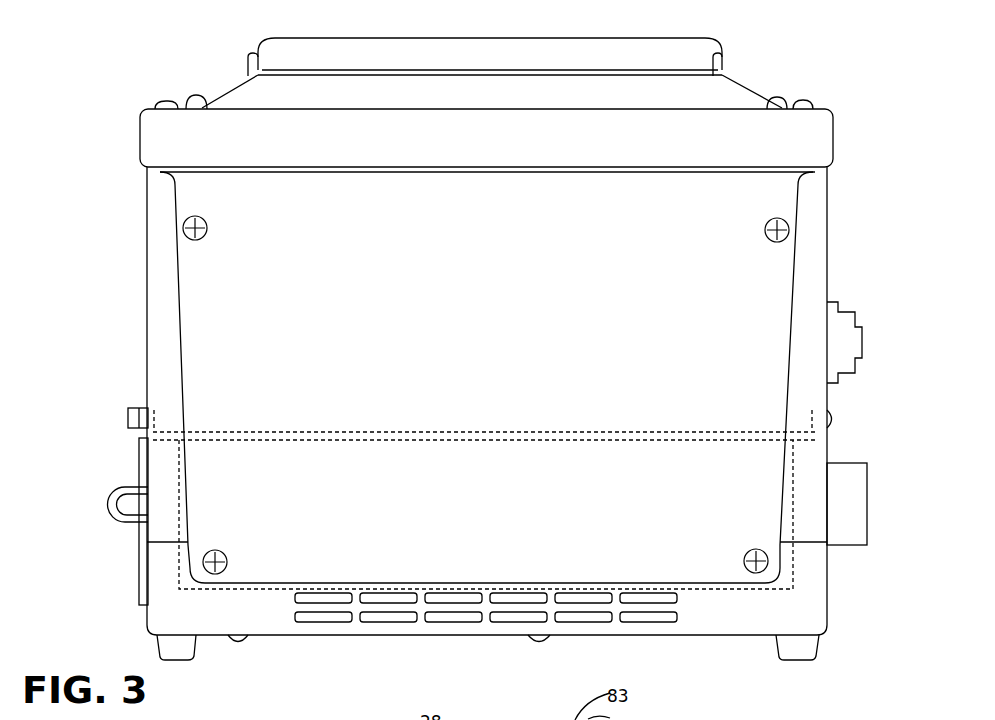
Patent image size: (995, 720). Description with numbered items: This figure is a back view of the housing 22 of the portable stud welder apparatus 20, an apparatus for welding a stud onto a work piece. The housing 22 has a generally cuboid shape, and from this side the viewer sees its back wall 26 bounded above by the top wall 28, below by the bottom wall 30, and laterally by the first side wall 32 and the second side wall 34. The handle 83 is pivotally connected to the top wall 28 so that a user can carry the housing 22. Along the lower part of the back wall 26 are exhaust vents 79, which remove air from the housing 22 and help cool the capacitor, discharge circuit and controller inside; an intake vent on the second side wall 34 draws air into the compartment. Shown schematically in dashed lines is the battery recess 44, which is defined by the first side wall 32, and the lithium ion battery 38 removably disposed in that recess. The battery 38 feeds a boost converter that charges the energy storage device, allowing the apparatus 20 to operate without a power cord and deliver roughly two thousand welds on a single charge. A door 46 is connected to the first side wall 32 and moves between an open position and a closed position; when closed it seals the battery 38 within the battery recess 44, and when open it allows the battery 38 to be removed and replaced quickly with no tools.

The portable stud welder apparatus 20 is at (138, 75).
The housing 22 is at (140, 253).
The back wall 26 is at (690, 573).
The top wall 28 is at (192, 97).
The bottom wall 30 is at (215, 637).
The first side wall 32 is at (147, 333).
The second side wall 34 is at (827, 215).
The lithium ion battery 38 is at (408, 497).
The battery recess 44 is at (538, 432).
The door 46 is at (140, 538).
The exhaust vents 79 is at (458, 617).
The handle 83 is at (540, 50).